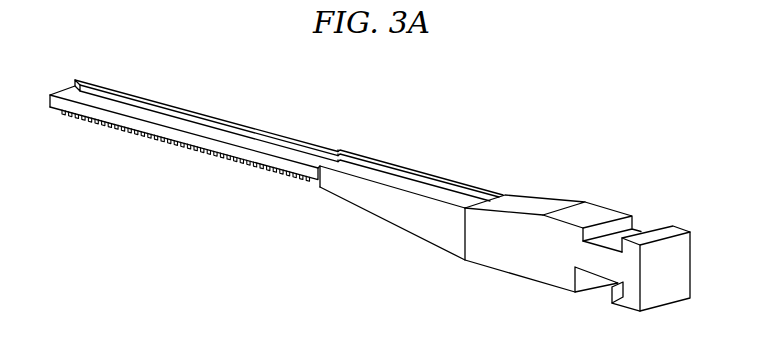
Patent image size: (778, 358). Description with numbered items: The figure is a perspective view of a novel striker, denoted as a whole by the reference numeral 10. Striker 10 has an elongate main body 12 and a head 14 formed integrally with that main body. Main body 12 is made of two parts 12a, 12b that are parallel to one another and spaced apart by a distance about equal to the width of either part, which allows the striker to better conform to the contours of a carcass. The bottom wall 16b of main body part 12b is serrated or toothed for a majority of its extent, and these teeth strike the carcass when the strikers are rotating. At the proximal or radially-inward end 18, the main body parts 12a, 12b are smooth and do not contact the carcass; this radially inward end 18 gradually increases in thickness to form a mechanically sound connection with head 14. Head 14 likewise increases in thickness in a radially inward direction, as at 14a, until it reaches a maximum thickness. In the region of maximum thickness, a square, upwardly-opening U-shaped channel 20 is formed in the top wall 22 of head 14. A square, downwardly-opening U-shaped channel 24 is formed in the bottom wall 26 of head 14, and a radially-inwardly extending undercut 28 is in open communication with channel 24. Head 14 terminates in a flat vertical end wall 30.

The striker 10 is at (566, 137).
The main body 12 is at (373, 163).
The main body part 12a is at (182, 107).
The main body part 12b is at (97, 122).
The head 14 is at (610, 203).
The thickness-increasing region of head 14a is at (540, 197).
The bottom wall 16b is at (193, 152).
The radially inward end 18 is at (373, 213).
The upwardly-opening U-shaped channel 20 is at (637, 230).
The top wall 22 is at (683, 228).
The downwardly-opening U-shaped channel 24 is at (583, 280).
The bottom wall 26 is at (632, 312).
The undercut 28 is at (615, 305).
The end wall 30 is at (680, 258).